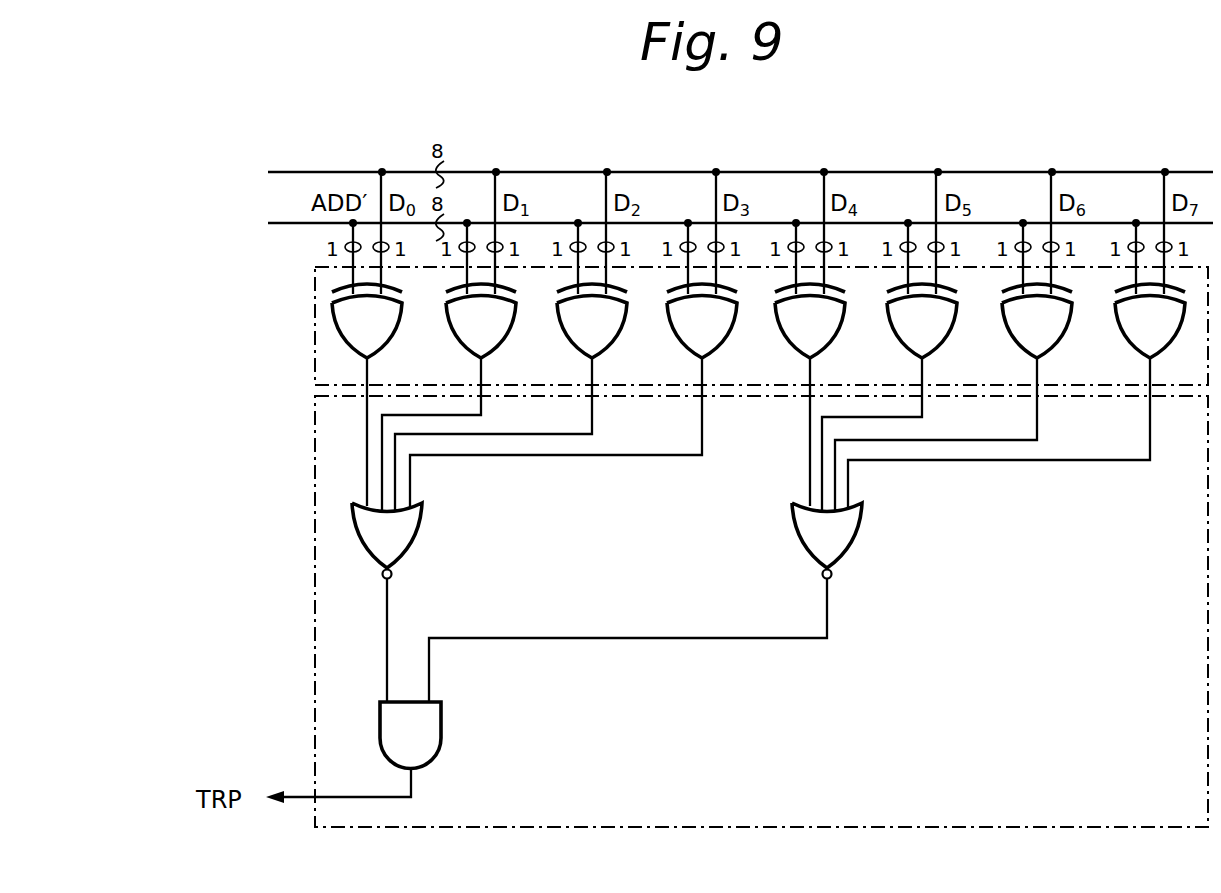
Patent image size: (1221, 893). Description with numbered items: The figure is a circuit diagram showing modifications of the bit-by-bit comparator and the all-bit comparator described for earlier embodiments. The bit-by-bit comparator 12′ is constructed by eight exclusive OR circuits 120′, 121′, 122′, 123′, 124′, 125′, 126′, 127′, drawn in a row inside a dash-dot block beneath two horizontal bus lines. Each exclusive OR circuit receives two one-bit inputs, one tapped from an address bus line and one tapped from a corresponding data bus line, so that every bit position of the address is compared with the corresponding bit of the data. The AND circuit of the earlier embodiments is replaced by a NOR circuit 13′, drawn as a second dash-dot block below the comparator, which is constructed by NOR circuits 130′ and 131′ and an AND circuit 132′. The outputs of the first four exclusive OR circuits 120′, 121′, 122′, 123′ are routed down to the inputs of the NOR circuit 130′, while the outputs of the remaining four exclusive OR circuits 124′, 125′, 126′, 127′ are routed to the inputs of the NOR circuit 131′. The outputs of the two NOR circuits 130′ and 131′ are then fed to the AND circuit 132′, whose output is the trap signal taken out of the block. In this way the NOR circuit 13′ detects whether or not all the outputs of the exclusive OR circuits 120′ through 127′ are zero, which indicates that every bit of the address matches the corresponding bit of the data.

The bit-by-bit comparator 12′ is at (315, 322).
The NOR circuit 13′ is at (315, 562).
The exclusive OR circuit 120′ is at (401, 330).
The exclusive OR circuit 121′ is at (515, 330).
The exclusive OR circuit 122′ is at (626, 330).
The exclusive OR circuit 123′ is at (736, 330).
The exclusive OR circuit 124′ is at (844, 330).
The exclusive OR circuit 125′ is at (956, 330).
The exclusive OR circuit 126′ is at (1071, 330).
The exclusive OR circuit 127′ is at (1178, 332).
The NOR circuit 130′ is at (423, 537).
The NOR circuit 131′ is at (863, 537).
The AND circuit 132′ is at (442, 732).